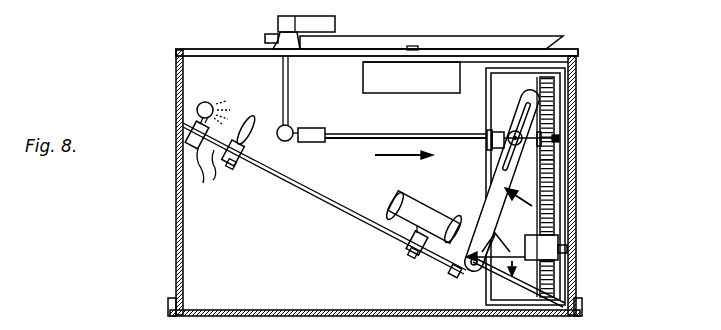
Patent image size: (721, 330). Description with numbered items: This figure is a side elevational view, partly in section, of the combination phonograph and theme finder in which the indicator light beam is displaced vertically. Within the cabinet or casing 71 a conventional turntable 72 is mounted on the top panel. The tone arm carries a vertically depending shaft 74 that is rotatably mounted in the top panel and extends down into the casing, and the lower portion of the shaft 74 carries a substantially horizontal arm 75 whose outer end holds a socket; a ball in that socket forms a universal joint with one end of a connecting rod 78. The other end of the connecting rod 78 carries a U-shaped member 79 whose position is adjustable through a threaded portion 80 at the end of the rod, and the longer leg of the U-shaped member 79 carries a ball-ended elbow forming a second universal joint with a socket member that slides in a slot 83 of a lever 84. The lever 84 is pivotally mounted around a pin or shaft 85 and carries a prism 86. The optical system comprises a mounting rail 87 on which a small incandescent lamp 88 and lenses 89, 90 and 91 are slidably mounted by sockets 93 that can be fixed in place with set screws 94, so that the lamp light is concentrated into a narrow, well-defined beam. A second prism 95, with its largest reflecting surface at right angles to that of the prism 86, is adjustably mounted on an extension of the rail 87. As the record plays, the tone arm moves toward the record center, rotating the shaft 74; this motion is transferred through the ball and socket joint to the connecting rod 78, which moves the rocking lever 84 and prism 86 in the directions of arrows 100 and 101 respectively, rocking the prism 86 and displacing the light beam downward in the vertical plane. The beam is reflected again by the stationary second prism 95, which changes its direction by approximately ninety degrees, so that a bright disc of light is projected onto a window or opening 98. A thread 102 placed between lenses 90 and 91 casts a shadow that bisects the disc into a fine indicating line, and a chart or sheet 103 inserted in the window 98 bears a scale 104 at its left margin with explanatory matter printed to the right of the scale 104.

The cabinet or casing 71 is at (575, 180).
The turntable 72 is at (565, 36).
The shaft 74 is at (290, 91).
The arm 75 is at (305, 24).
The connecting rod 78 is at (383, 135).
The U-shaped member 79 is at (544, 124).
The threaded portion 80 is at (559, 139).
The slot 83 is at (540, 94).
The lever 84 is at (496, 187).
The pin or shaft 85 is at (468, 272).
The prism 86 is at (516, 2).
The mounting rail 87 is at (266, 0).
The incandescent lamp 88 is at (213, 94).
The lens 89 is at (250, 116).
The lens 90 is at (402, 201).
The lens 91 is at (465, 215).
The sockets 93 is at (422, 258).
The set screws 94 is at (191, 144).
The second prism 95 is at (545, 245).
The window or opening 98 is at (557, 103).
The arrow 100 is at (548, 197).
The arrow 101 is at (517, 270).
The thread 102 is at (408, 234).
The chart or sheet 103 is at (513, 97).
The scale 104 is at (549, 163).